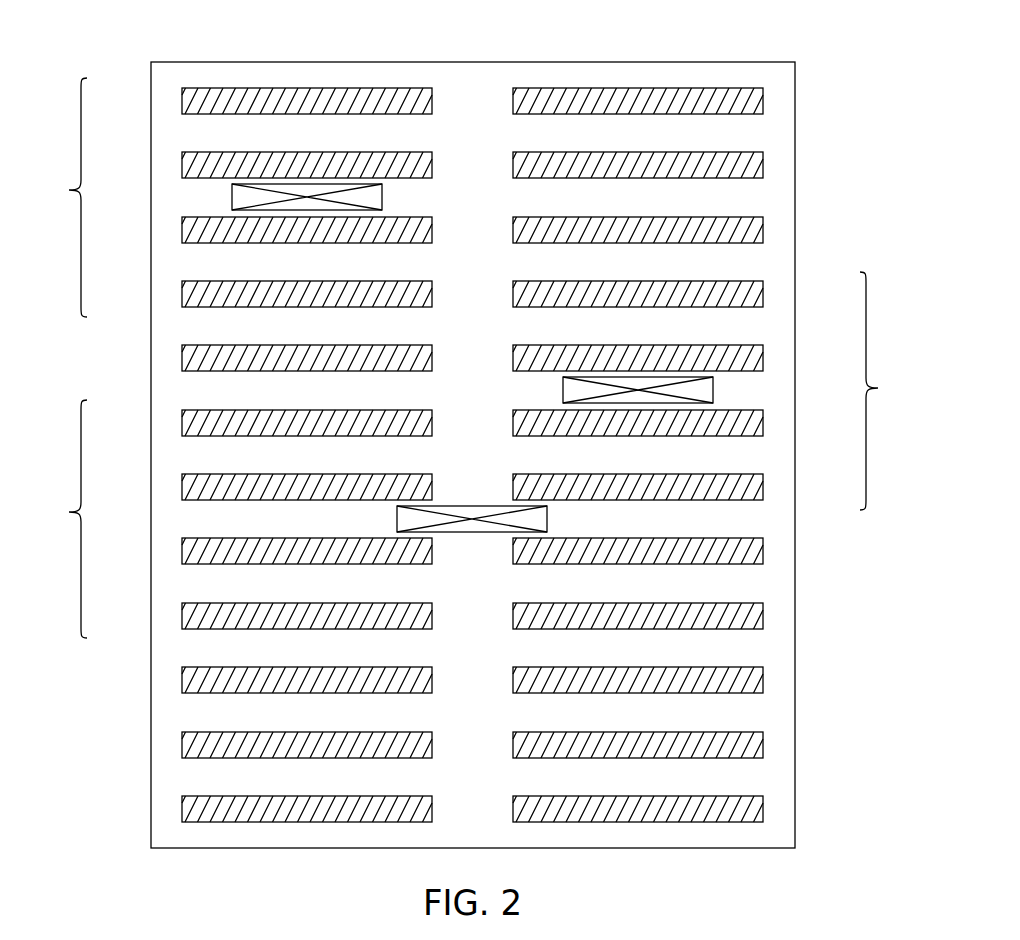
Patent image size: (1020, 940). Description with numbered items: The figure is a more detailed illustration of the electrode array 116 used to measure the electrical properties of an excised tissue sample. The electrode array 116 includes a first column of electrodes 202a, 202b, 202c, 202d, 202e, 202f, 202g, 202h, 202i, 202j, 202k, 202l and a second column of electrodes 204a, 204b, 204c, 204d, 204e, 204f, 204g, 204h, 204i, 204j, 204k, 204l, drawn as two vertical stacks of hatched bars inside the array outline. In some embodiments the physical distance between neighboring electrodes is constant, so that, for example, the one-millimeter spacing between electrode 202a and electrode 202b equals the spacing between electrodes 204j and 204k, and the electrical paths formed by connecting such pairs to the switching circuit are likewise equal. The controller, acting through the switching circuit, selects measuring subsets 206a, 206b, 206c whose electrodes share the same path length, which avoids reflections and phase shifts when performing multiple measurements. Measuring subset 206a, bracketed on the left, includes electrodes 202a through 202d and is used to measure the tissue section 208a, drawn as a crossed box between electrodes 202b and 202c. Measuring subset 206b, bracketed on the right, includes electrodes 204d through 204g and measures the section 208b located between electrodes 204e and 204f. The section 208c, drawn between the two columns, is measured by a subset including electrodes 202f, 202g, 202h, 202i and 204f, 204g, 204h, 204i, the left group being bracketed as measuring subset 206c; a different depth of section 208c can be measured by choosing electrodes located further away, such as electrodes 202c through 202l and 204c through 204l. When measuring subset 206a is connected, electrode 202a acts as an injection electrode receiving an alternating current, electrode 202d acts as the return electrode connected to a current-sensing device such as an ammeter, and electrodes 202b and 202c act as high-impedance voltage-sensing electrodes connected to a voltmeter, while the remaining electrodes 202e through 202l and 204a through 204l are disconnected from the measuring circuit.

The electrode array 116 is at (711, 62).
The electrode 202a is at (182, 98).
The electrode 202b is at (182, 162).
The electrode 202c is at (182, 227).
The electrode 202d is at (182, 291).
The electrode 202e is at (182, 355).
The electrode 202f is at (182, 420).
The electrode 202g is at (182, 484).
The electrode 202h is at (182, 548).
The electrode 202i is at (182, 613).
The electrode 202j is at (182, 677).
The electrode 202k is at (182, 742).
The electrode 202l is at (182, 806).
The electrode 204a is at (763, 99).
The electrode 204b is at (763, 163).
The electrode 204c is at (763, 228).
The electrode 204d is at (763, 292).
The electrode 204e is at (763, 356).
The electrode 204f is at (763, 421).
The electrode 204g is at (763, 485).
The electrode 204h is at (763, 549).
The electrode 204i is at (763, 614).
The electrode 204j is at (763, 678).
The electrode 204k is at (763, 743).
The electrode 204l is at (763, 807).
The measuring subset 206a is at (52, 197).
The measuring subset 206b is at (897, 391).
The measuring subset 206c is at (52, 519).
The section 208a is at (382, 196).
The section 208b is at (563, 380).
The section 208c is at (473, 505).